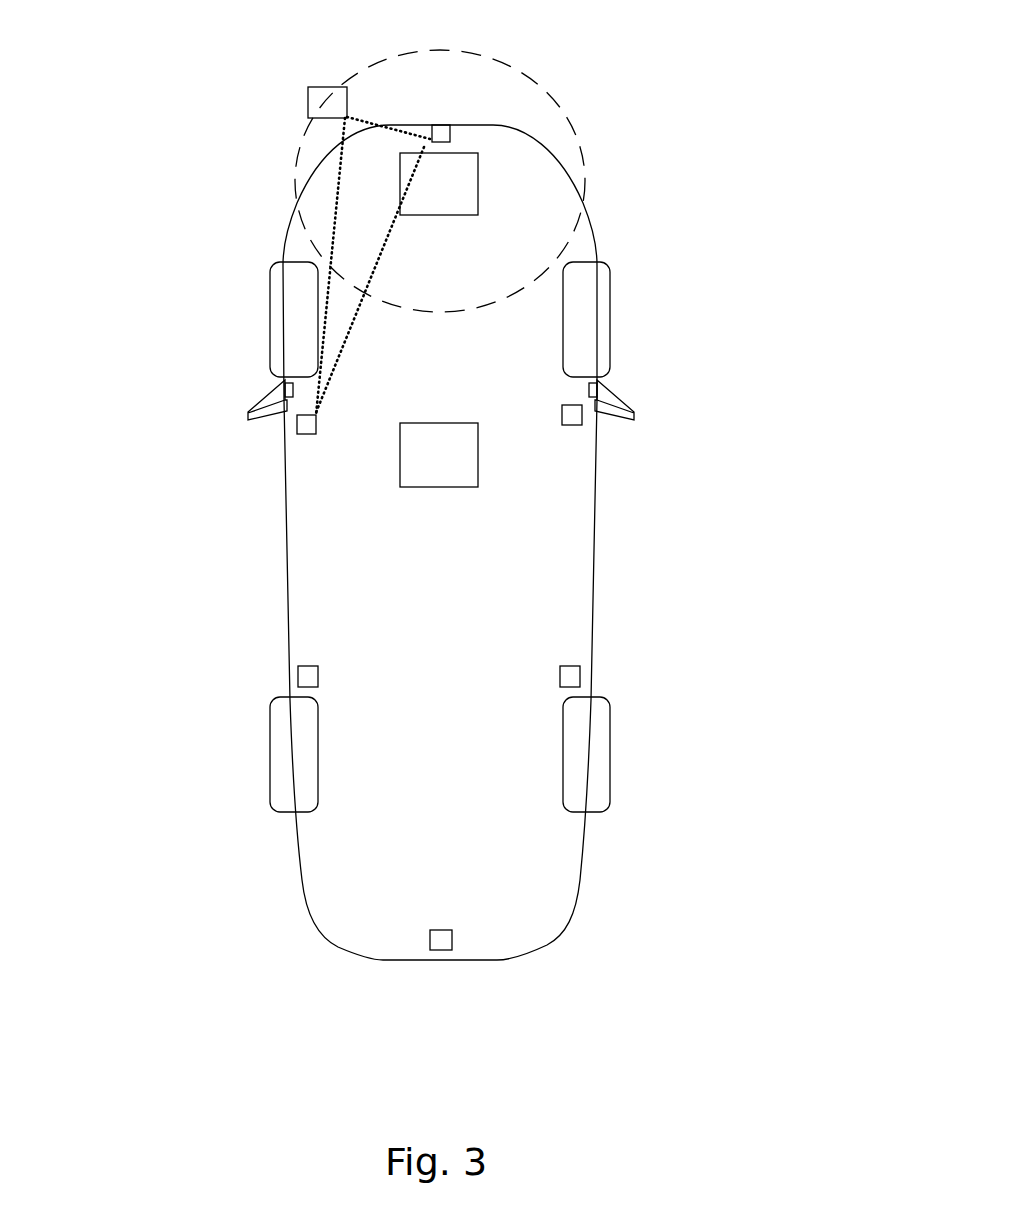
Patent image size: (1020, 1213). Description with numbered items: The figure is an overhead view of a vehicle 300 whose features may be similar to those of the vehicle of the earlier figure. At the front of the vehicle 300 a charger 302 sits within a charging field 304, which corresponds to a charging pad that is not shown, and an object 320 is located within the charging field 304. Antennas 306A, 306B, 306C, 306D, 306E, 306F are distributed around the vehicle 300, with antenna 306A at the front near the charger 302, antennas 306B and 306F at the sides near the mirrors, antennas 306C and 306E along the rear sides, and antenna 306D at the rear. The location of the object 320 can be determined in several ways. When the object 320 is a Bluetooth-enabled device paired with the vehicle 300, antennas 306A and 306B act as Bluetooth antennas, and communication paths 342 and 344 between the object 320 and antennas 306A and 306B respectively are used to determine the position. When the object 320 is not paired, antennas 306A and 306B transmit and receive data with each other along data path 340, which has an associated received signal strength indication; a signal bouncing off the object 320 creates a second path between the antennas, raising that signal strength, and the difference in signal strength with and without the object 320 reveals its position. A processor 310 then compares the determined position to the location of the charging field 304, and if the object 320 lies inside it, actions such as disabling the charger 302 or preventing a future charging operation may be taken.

The vehicle 300 is at (285, 537).
The charger 302 is at (478, 215).
The charging field 304 is at (583, 150).
The antenna 306A is at (440, 124).
The antenna 306B is at (296, 427).
The antenna 306C is at (310, 667).
The antenna 306D is at (440, 950).
The antenna 306E is at (572, 667).
The antenna 306F is at (582, 415).
The processor 310 is at (439, 455).
The object 320 is at (308, 102).
The data path 340 is at (378, 262).
The communication path 342 is at (390, 122).
The communication path 344 is at (335, 215).